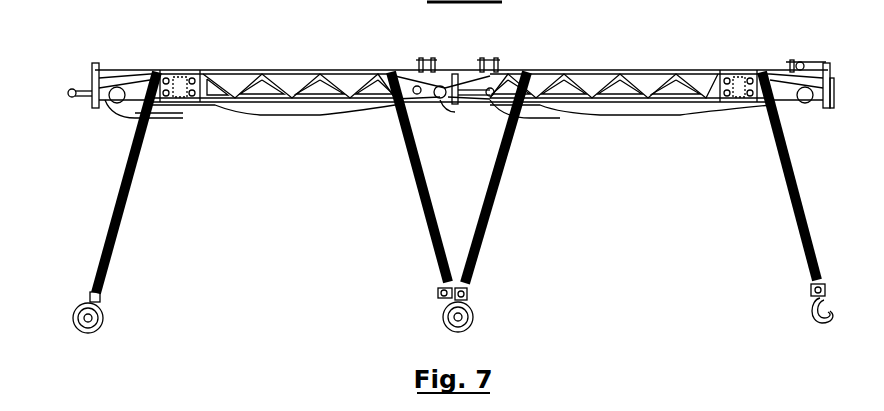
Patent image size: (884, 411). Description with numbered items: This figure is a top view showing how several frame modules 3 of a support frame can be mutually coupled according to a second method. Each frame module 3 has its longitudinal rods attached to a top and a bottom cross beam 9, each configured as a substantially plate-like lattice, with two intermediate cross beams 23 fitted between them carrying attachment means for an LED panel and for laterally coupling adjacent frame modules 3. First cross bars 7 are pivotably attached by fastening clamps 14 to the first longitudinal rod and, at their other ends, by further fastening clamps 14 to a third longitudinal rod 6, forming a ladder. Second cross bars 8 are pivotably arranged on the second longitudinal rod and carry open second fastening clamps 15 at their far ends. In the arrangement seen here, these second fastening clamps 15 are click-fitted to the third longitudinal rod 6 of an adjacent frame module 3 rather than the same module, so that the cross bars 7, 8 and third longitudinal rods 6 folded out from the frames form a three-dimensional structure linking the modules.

The frame module 3 is at (256, 181).
The third longitudinal rod 6 is at (78, 322).
The first cross bar 7 is at (130, 170).
The second cross bar 8 is at (413, 185).
The cross beam 9 is at (215, 72).
The fastening clamp 14 is at (98, 298).
The second fastening clamp 15 is at (445, 297).
The intermediate cross beam 23 is at (147, 70).